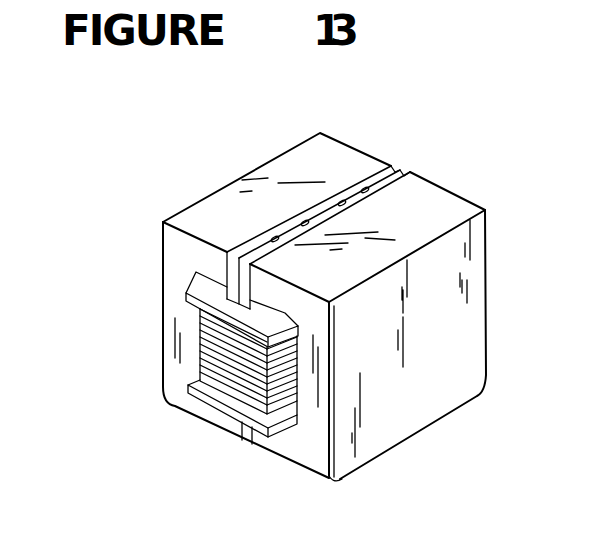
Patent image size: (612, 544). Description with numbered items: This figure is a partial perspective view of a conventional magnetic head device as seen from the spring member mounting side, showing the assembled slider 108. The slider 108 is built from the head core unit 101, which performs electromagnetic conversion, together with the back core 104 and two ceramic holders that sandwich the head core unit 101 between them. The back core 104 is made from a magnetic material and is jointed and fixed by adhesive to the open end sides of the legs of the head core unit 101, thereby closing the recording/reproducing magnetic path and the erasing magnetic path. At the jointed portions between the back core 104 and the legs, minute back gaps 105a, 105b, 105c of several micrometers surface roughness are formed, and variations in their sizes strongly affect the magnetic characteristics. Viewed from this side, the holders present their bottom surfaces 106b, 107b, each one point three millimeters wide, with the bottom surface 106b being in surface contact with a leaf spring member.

The head core unit 101 is at (238, 433).
The back core 104 is at (290, 221).
The back gap 105a is at (223, 250).
The back gap 105b is at (328, 203).
The back gap 105c is at (391, 170).
The bottom surface 106b is at (422, 222).
The bottom surface 107b is at (207, 213).
The slider 108 is at (220, 176).